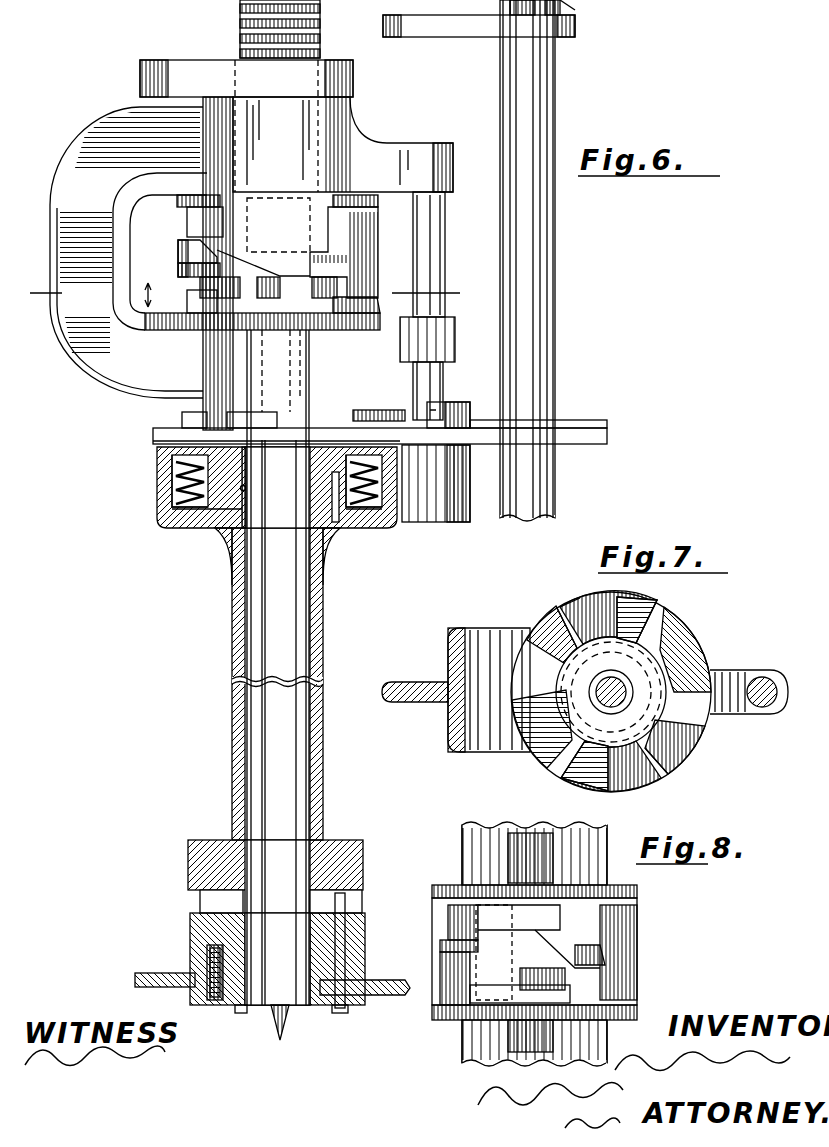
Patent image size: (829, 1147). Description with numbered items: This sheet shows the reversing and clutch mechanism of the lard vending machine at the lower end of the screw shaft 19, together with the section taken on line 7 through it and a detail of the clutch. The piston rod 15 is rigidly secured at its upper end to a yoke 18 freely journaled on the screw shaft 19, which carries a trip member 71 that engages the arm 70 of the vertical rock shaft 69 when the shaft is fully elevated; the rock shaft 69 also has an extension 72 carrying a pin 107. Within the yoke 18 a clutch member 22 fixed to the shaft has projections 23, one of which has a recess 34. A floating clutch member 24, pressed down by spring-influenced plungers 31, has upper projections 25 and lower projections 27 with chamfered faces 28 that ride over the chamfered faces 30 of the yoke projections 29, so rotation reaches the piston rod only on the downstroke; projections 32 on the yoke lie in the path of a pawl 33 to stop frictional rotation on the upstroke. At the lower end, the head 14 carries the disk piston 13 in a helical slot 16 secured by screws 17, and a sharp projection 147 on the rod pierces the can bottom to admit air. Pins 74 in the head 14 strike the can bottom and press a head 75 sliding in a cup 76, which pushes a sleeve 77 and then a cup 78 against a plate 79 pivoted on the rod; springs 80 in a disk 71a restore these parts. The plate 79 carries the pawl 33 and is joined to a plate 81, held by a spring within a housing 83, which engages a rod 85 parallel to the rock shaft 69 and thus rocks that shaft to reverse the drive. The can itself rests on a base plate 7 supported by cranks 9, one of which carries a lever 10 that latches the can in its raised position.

In FIG. 6, the screw shaft 19 is at (240, 16).
In FIG. 6, the trip member 71 is at (145, 77).
In FIG. 6, the yoke 18 is at (70, 168).
In FIG. 7, the yoke 18 is at (448, 655).
In FIG. 6, the clutch member 22 is at (178, 200).
In FIG. 7, the clutch member 22 is at (528, 668).
In FIG. 6, the spring-influenced plungers 31 is at (352, 195).
In FIG. 7, the spring-influenced plungers 31 is at (692, 626).
In FIG. 8, the spring-influenced plungers 31 is at (470, 912).
In FIG. 6, the projections 23 is at (289, 265).
In FIG. 7, the projections 23 is at (640, 635).
In FIG. 8, the projections 23 is at (628, 936).
In FIG. 6, the recess 34 is at (318, 258).
In FIG. 7, the recess 34 is at (600, 602).
In FIG. 8, the recess 34 is at (440, 946).
In FIG. 6, the projections 25 is at (180, 243).
In FIG. 6, the floating clutch member 24 is at (178, 265).
In FIG. 8, the floating clutch member 24 is at (440, 960).
In FIG. 6, the platform or base plate 7 is at (249, 304).
In FIG. 6, the chamfered faces 28 is at (190, 300).
In FIG. 7, the chamfered faces 28 is at (682, 666).
In FIG. 8, the chamfered faces 28 is at (500, 995).
In FIG. 6, the projections 29 is at (185, 308).
In FIG. 8, the projections 29 is at (572, 1000).
In FIG. 6, the projections 27 is at (245, 285).
In FIG. 7, the projections 27 is at (652, 646).
In FIG. 8, the projections 27 is at (462, 985).
In FIG. 6, the chamfered faces 30 is at (372, 308).
In FIG. 8, the chamfered faces 30 is at (520, 1002).
In FIG. 6, the projections 32 is at (185, 414).
In FIG. 6, the cranks 9 is at (153, 434).
In FIG. 6, the plate 79 is at (157, 445).
In FIG. 6, the lever 10 is at (160, 478).
In FIG. 6, the springs 80 is at (158, 497).
In FIG. 6, the cup 78 is at (200, 525).
In FIG. 6, the disk 71a is at (220, 568).
In FIG. 6, the sleeve or connecting member 77 is at (232, 712).
In FIG. 6, the piston rod 15 is at (262, 745).
In FIG. 6, the head 75 is at (215, 862).
In FIG. 6, the cup 76 is at (190, 885).
In FIG. 6, the head 14 is at (190, 938).
In FIG. 6, the disk piston 13 is at (150, 975).
In FIG. 6, the screws 17 is at (215, 1005).
In FIG. 6, the sharp projection 147 is at (276, 1020).
In FIG. 6, the pins or actuators 74 is at (336, 1014).
In FIG. 6, the helical slot 16 is at (349, 1010).
In FIG. 6, the arm 70 is at (452, 30).
In FIG. 6, the extension 72 is at (565, 5).
In FIG. 6, the pin 107 is at (615, 0).
In FIG. 6, the rod 85 is at (520, 290).
In FIG. 6, the vertical rock shaft 69 is at (556, 335).
In FIG. 6, the plate 81 is at (490, 418).
In FIG. 6, the housing 83 is at (435, 525).
In FIG. 6, the pawl 33 is at (350, 425).